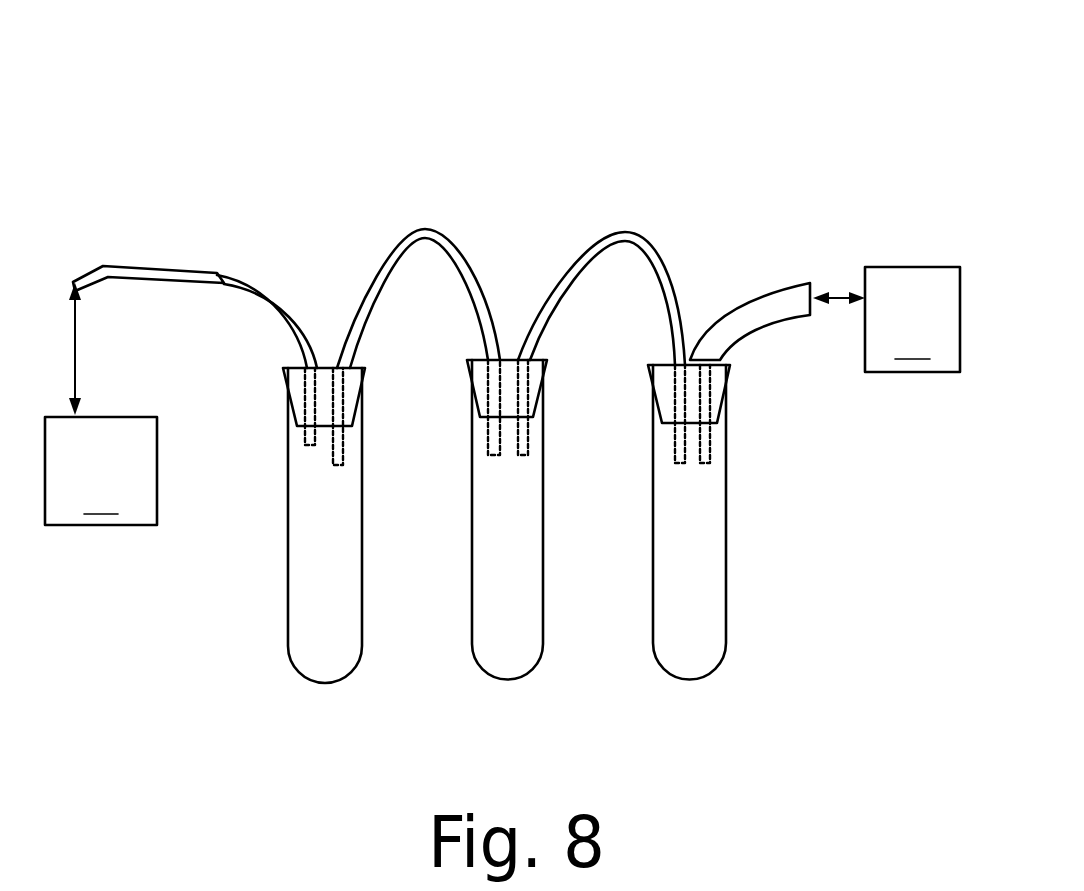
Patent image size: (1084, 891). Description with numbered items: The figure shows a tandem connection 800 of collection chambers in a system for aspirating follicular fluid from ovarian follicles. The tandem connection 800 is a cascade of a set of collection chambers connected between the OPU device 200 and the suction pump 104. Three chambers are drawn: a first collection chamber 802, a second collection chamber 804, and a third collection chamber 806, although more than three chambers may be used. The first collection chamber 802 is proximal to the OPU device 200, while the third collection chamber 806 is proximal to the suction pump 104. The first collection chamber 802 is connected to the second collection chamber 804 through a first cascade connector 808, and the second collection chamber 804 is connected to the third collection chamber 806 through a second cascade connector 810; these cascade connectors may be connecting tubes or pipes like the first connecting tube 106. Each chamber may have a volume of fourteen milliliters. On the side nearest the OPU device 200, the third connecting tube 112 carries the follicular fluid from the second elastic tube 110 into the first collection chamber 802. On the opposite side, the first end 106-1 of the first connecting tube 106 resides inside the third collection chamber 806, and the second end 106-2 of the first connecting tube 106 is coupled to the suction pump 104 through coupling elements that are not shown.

The tandem connection 800 is at (438, 87).
The suction pump 104 is at (101, 471).
The first connecting tube 106 is at (221, 284).
The first end of the first connecting tube 106-1 is at (305, 442).
The second end of the first connecting tube 106-2 is at (76, 282).
The third collection chamber 806 is at (300, 600).
The second collection chamber 804 is at (512, 600).
The first collection chamber 802 is at (708, 618).
The second cascade connector 810 is at (425, 232).
The first cascade connector 808 is at (619, 240).
The second elastic tube 110 is at (777, 327).
The third connecting tube 112 is at (707, 445).
The OPU device 200 is at (886, 319).